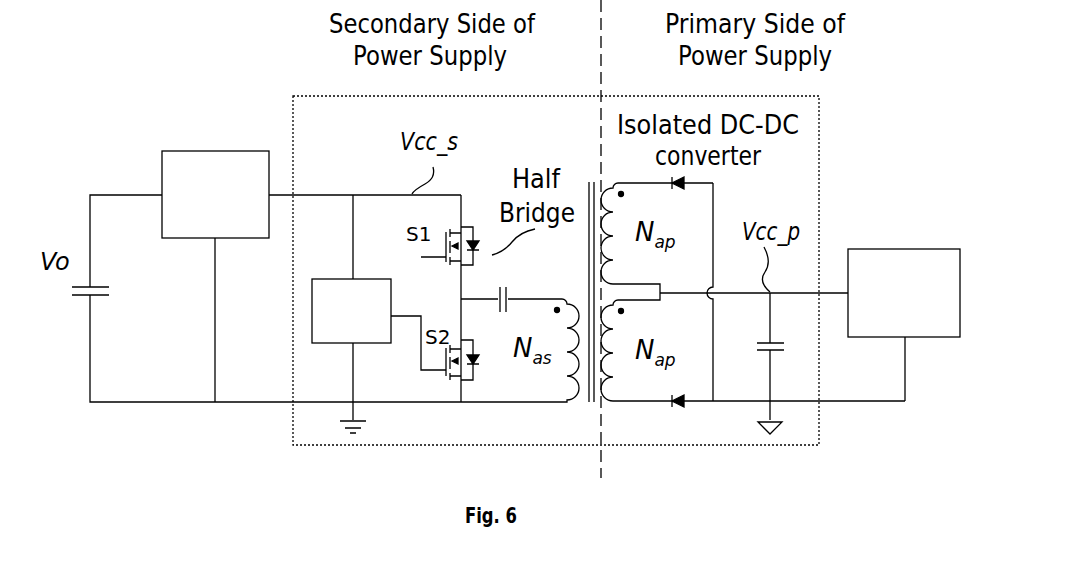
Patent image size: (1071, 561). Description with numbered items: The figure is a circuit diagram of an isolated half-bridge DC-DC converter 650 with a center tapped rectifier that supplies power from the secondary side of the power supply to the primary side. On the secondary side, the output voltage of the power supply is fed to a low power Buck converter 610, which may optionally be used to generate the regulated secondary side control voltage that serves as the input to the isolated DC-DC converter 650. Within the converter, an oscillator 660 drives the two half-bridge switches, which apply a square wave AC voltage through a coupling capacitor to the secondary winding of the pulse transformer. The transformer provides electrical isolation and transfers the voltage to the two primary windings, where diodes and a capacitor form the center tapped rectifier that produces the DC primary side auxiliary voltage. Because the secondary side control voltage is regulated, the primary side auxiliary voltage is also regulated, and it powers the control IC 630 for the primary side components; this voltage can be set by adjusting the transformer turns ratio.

The Buck converter 610 is at (162, 171).
The control IC 630 is at (866, 246).
The isolated DC-DC converter 650 is at (291, 107).
The oscillator 660 is at (332, 277).